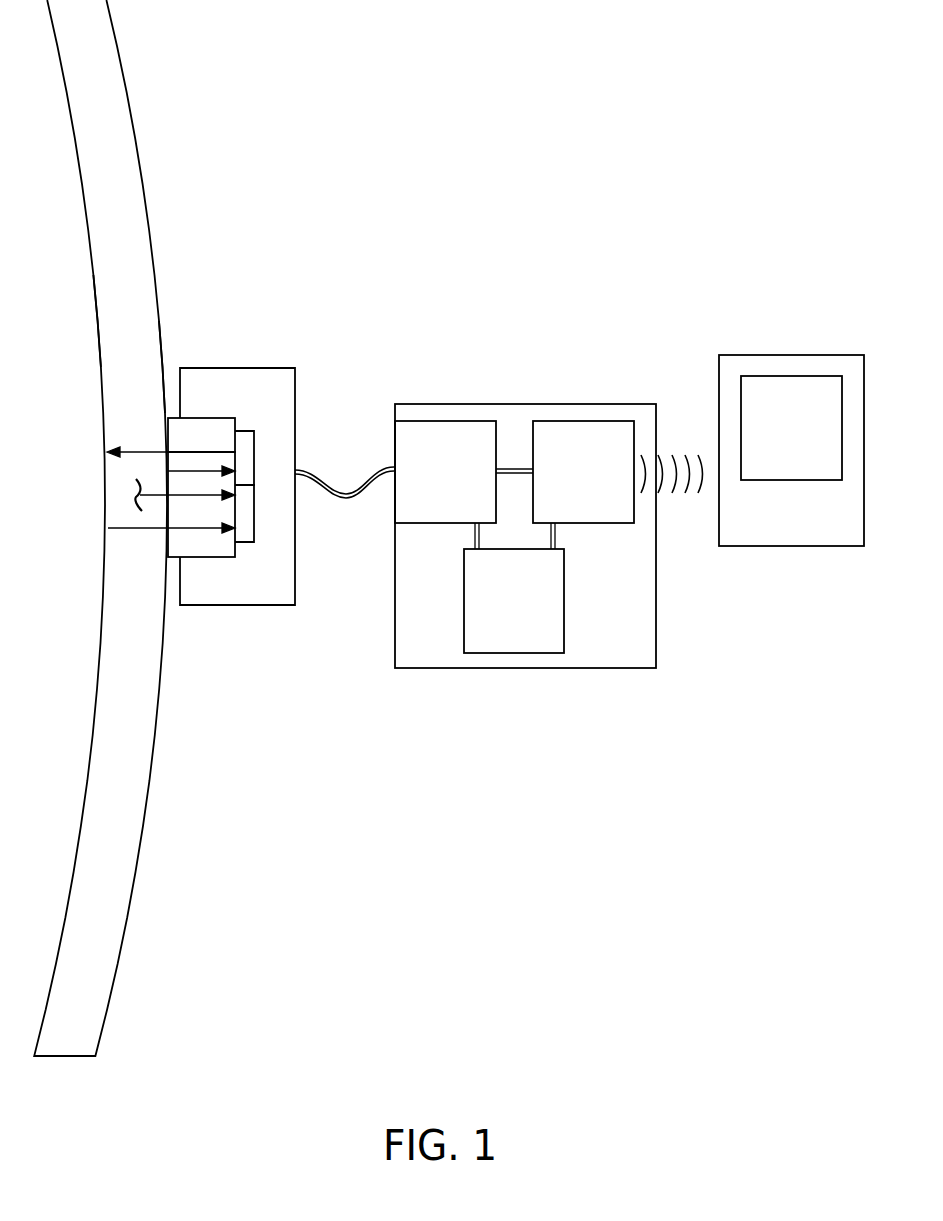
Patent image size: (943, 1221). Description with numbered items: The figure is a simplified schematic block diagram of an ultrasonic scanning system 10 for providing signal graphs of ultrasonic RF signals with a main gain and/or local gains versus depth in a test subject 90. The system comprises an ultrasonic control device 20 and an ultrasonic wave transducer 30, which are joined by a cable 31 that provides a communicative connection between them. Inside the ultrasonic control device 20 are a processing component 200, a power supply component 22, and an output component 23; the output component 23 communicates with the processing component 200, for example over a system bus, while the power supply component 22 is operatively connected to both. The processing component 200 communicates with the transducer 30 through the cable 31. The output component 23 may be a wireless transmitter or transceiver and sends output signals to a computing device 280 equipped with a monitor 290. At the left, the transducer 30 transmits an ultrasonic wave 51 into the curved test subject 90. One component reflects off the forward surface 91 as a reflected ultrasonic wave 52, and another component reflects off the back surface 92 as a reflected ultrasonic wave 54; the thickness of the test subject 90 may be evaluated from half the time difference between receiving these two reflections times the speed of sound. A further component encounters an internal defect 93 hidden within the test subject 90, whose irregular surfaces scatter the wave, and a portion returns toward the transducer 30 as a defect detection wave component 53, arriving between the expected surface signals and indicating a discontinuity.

The ultrasonic scanning system 10 is at (447, 59).
The test subject 90 is at (137, 121).
The forward surface 91 is at (164, 327).
The back surface 92 is at (97, 325).
The internal defect 93 is at (132, 495).
The ultrasonic wave transducer 30 is at (268, 368).
The ultrasonic wave 51 is at (200, 451).
The reflected ultrasonic wave 52 is at (235, 468).
The defect detection wave component 53 is at (235, 498).
The reflected ultrasonic wave 54 is at (202, 527).
The cable 31 is at (326, 470).
The ultrasonic control device 20 is at (526, 404).
The processing component 200 is at (426, 485).
The output component 23 is at (570, 485).
The power supply component 22 is at (502, 616).
The computing device 280 is at (772, 535).
The monitor 290 is at (772, 441).